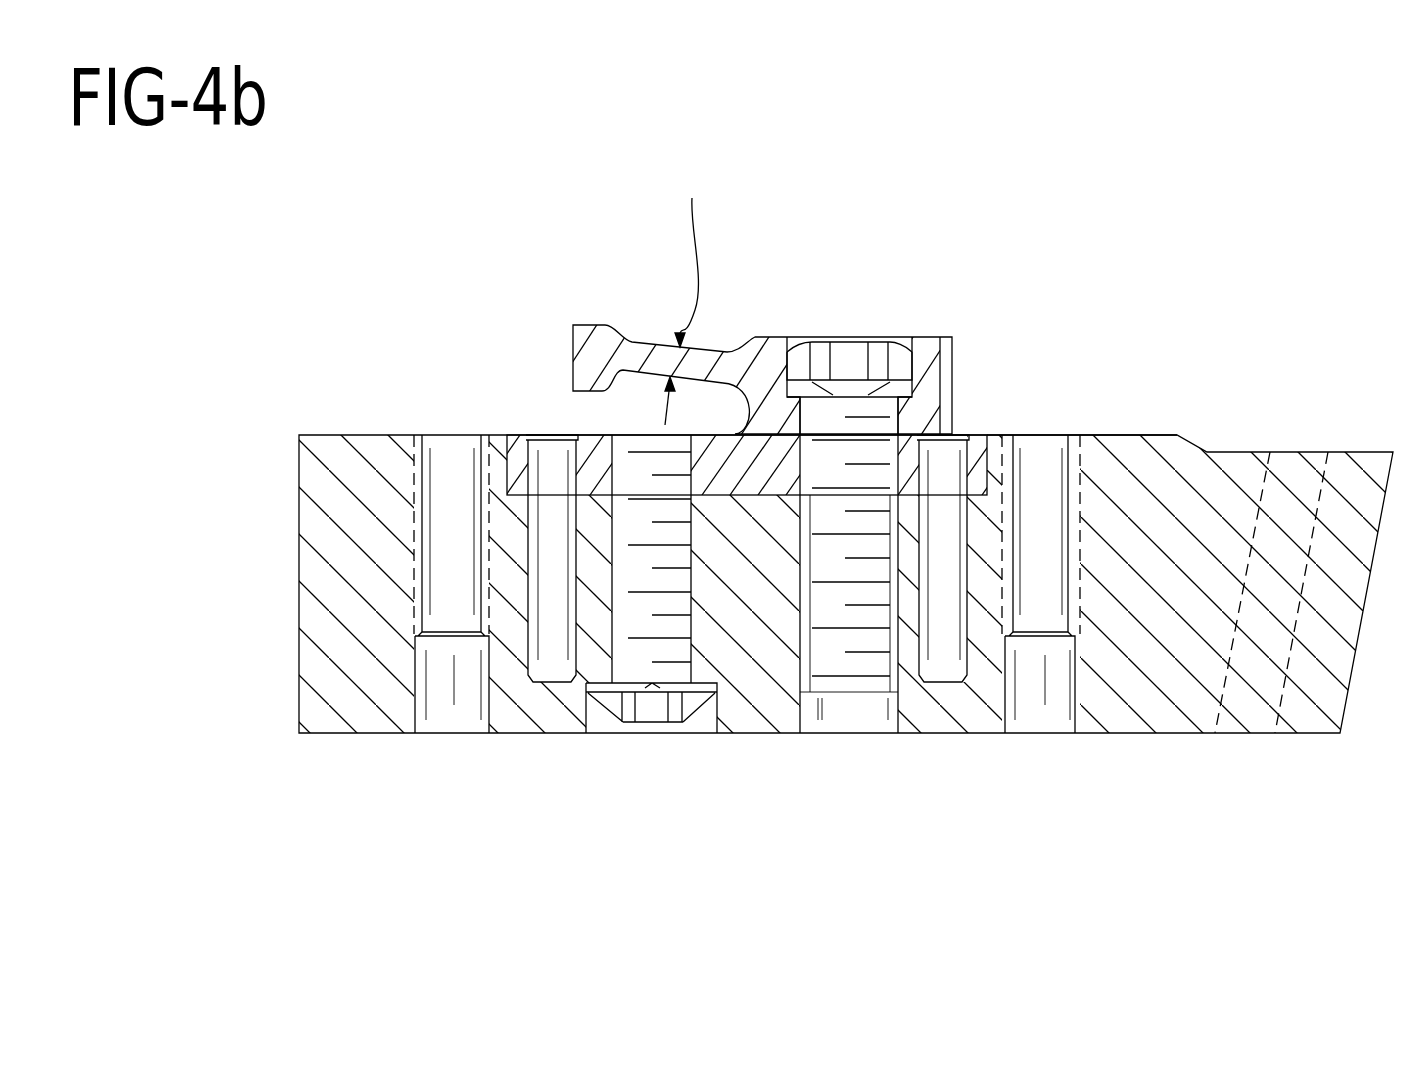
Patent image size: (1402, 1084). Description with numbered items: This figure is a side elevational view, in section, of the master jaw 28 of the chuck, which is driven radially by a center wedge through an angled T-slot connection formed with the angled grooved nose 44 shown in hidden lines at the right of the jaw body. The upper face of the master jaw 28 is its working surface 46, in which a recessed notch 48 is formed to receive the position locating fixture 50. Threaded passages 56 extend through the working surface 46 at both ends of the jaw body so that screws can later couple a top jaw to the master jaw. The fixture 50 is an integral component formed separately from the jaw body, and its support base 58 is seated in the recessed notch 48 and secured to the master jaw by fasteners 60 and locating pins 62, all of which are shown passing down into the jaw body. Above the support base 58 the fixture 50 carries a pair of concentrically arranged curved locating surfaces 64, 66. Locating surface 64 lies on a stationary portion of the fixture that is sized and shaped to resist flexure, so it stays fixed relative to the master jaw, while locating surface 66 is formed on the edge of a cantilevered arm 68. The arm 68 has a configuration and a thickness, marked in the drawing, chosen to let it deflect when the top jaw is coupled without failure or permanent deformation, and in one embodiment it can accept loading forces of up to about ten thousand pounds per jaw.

The master jaw 28 is at (233, 375).
The angled grooved nose 44 is at (1318, 497).
The working surface 46 is at (370, 419).
The recessed notch 48 is at (980, 432).
The position locating fixture 50 is at (782, 317).
The threaded passages 56 is at (423, 690).
The support base 58 is at (588, 432).
The fasteners 60 is at (692, 647).
The locating pins 62 is at (527, 658).
The curved locating surface 64 is at (971, 375).
The curved locating surface 66 is at (553, 348).
The cantilevered arm 68 is at (653, 340).